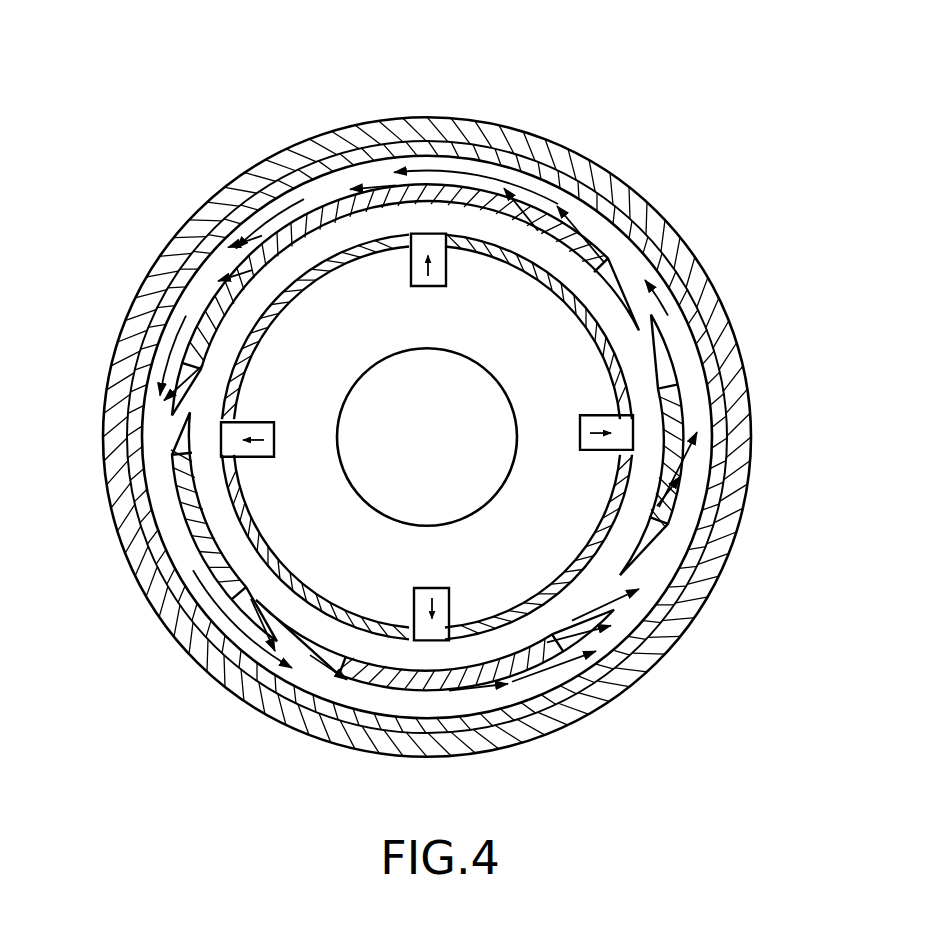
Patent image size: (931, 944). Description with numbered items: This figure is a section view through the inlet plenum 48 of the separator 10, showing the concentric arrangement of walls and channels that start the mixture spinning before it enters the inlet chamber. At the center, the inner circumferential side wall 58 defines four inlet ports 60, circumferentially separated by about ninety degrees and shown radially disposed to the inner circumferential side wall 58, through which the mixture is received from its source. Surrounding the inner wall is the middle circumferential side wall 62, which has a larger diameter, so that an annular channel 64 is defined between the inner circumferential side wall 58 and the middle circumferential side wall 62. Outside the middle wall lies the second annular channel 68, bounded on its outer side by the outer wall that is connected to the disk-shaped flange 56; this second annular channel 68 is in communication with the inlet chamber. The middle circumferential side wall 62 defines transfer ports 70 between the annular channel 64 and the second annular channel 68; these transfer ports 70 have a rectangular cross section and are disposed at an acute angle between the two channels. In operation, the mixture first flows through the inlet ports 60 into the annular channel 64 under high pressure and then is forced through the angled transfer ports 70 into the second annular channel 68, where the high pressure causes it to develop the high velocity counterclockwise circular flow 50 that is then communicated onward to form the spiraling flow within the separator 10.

The separator 10 is at (478, 74).
The plenum 48 is at (656, 709).
The high velocity circular flow 50 is at (620, 226).
The disk-shaped flange 56 is at (744, 360).
The inner circumferential side wall 58 is at (490, 262).
The inlet ports 60 is at (405, 262).
The middle circumferential side wall 62 is at (270, 600).
The annular channel 64 is at (420, 660).
The second annular channel 68 is at (720, 488).
The transfer ports 70 is at (527, 203).